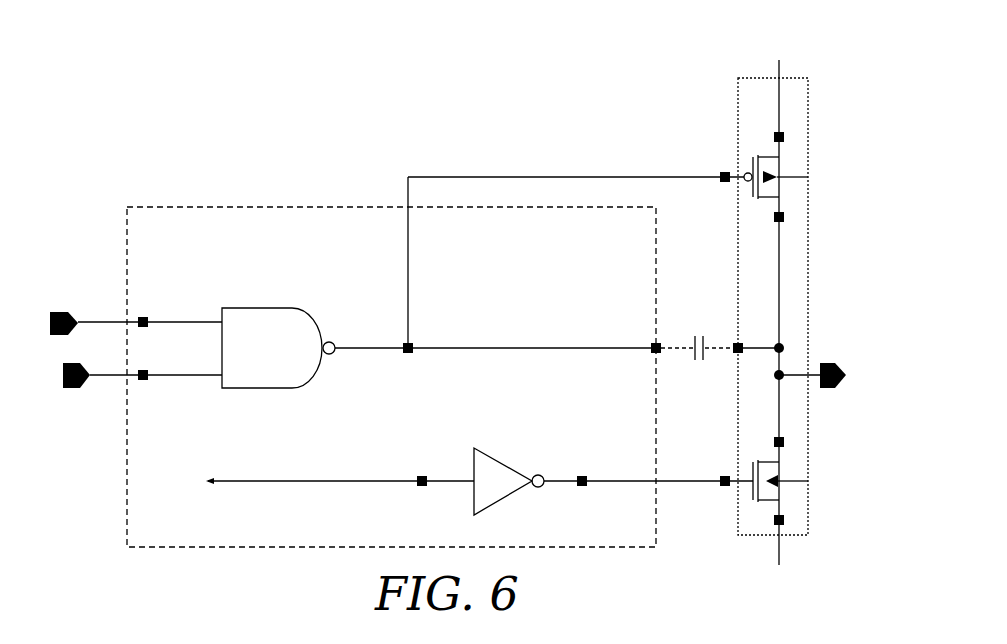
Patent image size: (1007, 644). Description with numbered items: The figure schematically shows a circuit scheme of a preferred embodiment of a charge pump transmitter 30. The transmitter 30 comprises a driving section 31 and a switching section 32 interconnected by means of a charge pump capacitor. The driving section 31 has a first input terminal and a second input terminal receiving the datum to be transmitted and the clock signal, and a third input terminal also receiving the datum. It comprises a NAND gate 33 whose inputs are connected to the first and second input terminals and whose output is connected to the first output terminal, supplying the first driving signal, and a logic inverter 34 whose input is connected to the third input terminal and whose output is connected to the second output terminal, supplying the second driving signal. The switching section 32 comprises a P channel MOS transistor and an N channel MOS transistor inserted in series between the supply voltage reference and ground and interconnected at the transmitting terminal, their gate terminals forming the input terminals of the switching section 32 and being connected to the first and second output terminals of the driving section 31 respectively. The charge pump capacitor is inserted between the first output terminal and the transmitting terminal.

The charge pump transmitter 30 is at (287, 152).
The driving section 31 is at (150, 477).
The switching section 32 is at (748, 90).
The NAND gate 33 is at (268, 337).
The logic inverter 34 is at (490, 490).